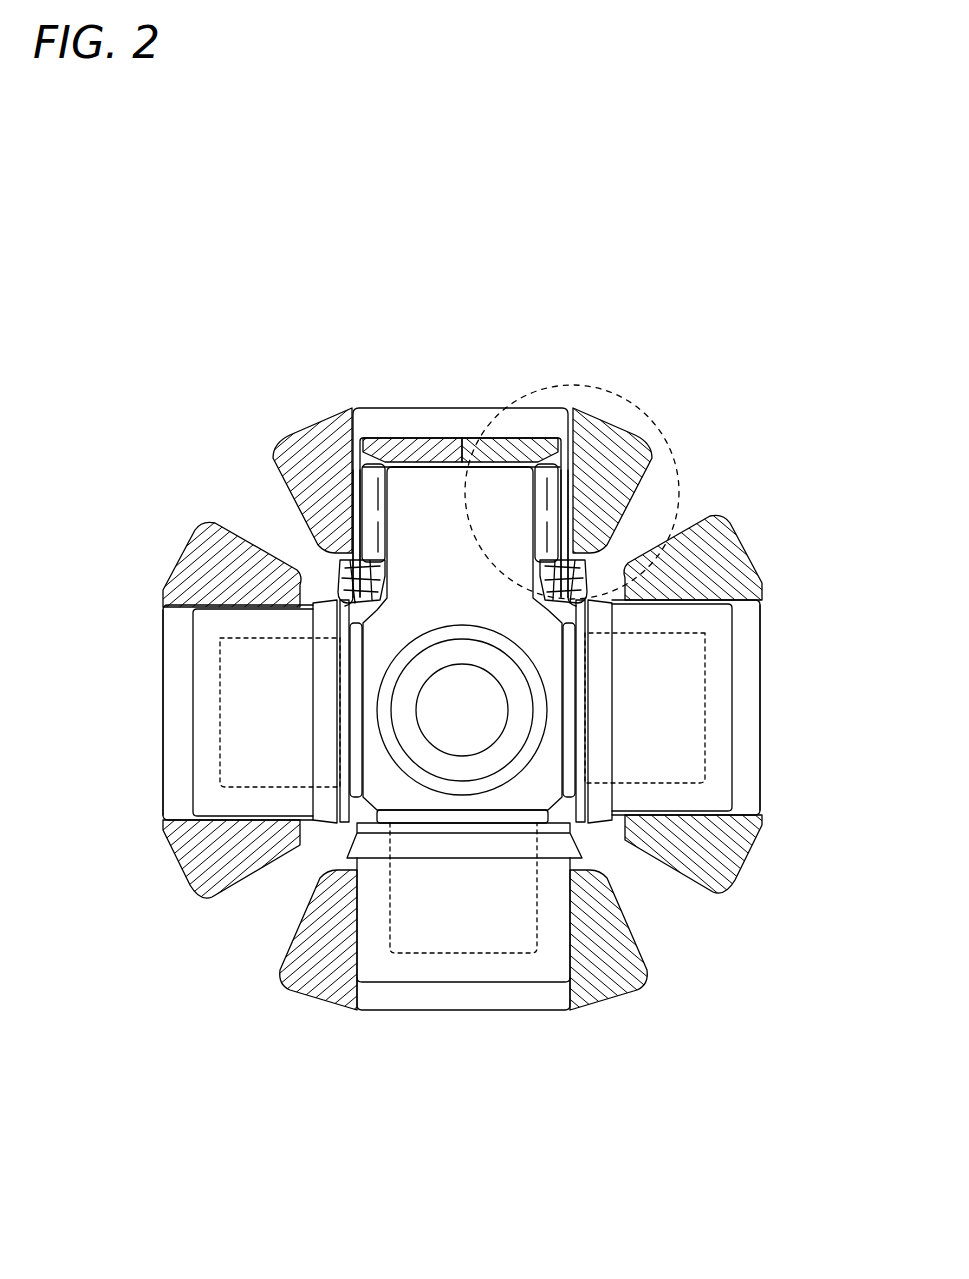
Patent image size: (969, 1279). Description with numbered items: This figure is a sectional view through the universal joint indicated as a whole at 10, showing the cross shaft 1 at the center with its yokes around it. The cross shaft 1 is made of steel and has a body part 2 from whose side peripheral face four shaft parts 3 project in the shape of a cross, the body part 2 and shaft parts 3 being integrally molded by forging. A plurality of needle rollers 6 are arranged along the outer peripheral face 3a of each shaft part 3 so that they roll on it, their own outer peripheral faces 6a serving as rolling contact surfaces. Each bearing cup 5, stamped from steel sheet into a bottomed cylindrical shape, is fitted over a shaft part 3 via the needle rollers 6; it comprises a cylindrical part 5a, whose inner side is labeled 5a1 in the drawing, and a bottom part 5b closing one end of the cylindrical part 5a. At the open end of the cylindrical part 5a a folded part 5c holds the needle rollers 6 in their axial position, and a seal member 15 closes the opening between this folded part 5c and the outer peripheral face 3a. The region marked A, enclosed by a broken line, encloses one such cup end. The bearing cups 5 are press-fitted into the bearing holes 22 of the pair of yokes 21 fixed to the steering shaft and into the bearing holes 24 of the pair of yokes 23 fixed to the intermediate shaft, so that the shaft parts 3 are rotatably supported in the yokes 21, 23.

The cross shaft 1 is at (562, 805).
The body part 2 is at (412, 795).
The shaft part 3 is at (463, 448).
The outer peripheral face 3a is at (530, 432).
The bearing cup 5 is at (548, 430).
The cylindrical part 5a is at (355, 468).
The cup wall inner surface 5a1 is at (358, 462).
The bottom part 5b is at (400, 445).
The folded part 5c is at (355, 537).
The needle roller 6 is at (352, 520).
The outer peripheral face 6a is at (563, 515).
The universal joint 10 is at (636, 330).
The seal member 15 is at (560, 577).
The yoke 21 is at (726, 572).
The bearing hole 22 is at (750, 658).
The yoke 23 is at (612, 437).
The bearing hole 24 is at (378, 418).
The region A is at (676, 432).